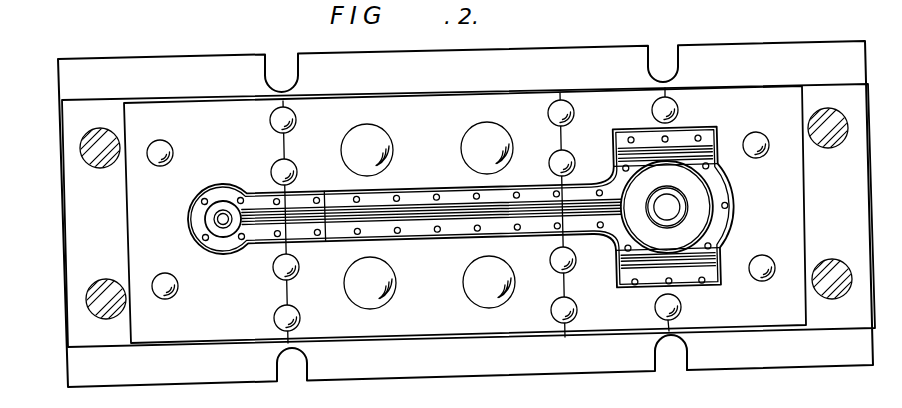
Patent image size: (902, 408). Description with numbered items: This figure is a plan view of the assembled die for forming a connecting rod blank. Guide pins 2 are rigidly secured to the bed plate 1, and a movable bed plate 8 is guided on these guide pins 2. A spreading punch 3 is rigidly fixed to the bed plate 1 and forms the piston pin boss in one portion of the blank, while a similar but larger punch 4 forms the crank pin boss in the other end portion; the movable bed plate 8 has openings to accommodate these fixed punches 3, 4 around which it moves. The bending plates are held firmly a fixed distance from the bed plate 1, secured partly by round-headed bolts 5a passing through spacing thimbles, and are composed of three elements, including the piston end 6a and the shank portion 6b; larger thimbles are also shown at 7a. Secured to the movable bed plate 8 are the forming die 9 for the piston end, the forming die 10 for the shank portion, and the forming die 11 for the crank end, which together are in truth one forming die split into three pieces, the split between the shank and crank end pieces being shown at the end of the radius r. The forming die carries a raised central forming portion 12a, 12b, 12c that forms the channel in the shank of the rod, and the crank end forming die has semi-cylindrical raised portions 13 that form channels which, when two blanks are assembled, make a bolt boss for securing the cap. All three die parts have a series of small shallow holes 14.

The bed plate 1 is at (787, 49).
The guide pins 2 is at (86, 149).
The spreading punch 3 is at (205, 219).
The punch 4 is at (667, 207).
The round-headed bolts 5a is at (163, 151).
The piston end bending plate 6a is at (249, 222).
The shank portion bending plate 6b is at (552, 212).
The large openings 7a is at (428, 215).
The movable bed plate 8 is at (462, 214).
The forming die for the piston end 9 is at (254, 241).
The forming die for the shank portion 10 is at (451, 232).
The forming die for the crank end 11 is at (721, 183).
The central forming portion 12a is at (294, 216).
The central forming portion 12b is at (413, 210).
The central forming portion 12c is at (586, 207).
The semi-cylindrical raised portions 13 is at (684, 158).
The small shallow holes 14 is at (204, 241).
The radius r is at (597, 249).